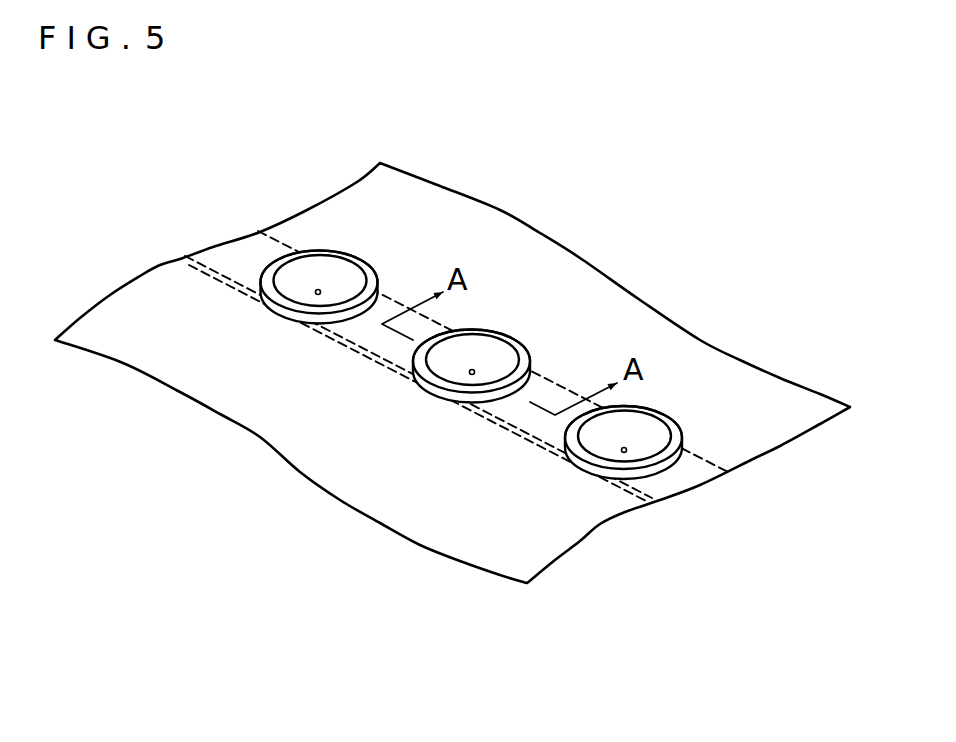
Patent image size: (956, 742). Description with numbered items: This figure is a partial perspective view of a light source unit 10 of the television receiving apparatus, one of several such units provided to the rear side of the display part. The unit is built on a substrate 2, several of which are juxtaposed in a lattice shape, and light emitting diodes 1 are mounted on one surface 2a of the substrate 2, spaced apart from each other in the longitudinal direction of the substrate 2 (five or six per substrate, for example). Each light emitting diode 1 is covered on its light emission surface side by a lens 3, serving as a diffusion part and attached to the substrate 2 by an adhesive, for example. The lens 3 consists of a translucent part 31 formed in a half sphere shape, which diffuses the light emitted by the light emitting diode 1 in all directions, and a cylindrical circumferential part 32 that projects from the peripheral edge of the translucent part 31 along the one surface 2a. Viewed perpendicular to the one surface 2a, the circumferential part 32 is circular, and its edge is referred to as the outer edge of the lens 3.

The light emitting diode 1 is at (316, 293).
The substrate 2 is at (456, 366).
The one surface 2a is at (552, 399).
The lens 3 is at (458, 342).
The translucent part 31 is at (284, 277).
The circumferential part 32 is at (371, 273).
The light source unit 10 is at (736, 334).